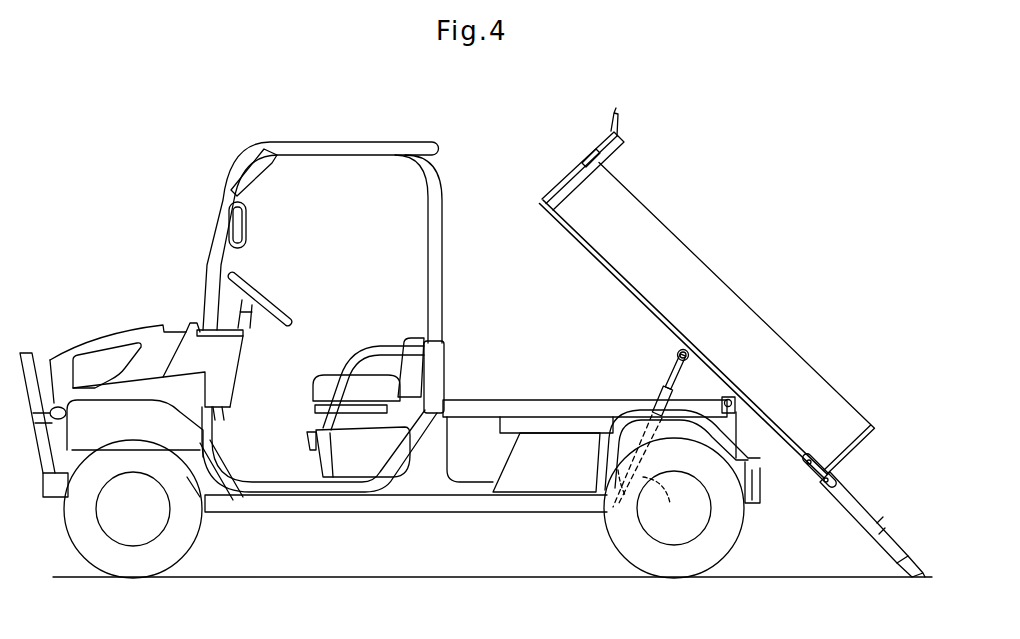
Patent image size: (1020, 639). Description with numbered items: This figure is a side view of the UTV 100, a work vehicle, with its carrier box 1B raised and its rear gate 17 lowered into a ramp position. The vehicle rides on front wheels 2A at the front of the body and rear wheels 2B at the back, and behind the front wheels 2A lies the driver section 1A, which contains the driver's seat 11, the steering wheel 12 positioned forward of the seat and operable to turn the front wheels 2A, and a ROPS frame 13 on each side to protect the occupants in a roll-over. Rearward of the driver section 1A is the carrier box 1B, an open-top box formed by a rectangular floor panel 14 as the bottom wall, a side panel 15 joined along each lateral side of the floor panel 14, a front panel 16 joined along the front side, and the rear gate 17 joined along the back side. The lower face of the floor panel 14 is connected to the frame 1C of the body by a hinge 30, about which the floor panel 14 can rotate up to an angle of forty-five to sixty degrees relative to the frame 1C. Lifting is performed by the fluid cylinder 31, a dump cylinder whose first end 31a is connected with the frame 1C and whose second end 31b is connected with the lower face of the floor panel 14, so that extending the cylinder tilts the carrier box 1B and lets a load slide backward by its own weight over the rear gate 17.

The UTV 100 is at (162, 144).
The driver section 1A is at (210, 226).
The carrier box 1B is at (726, 275).
The frame 1C is at (540, 400).
The front wheels 2A is at (185, 535).
The rear wheels 2B is at (627, 542).
The driver's seat 11 is at (328, 378).
The steering wheel 12 is at (250, 297).
The ROPS frame 13 is at (213, 297).
The floor panel 14 is at (583, 243).
The side panel 15 is at (820, 387).
The front panel 16 is at (570, 177).
The rear gate 17 is at (870, 510).
The hinge 30 is at (731, 402).
The fluid cylinder 31 is at (653, 384).
The first end 31a is at (640, 478).
The second end 31b is at (680, 355).